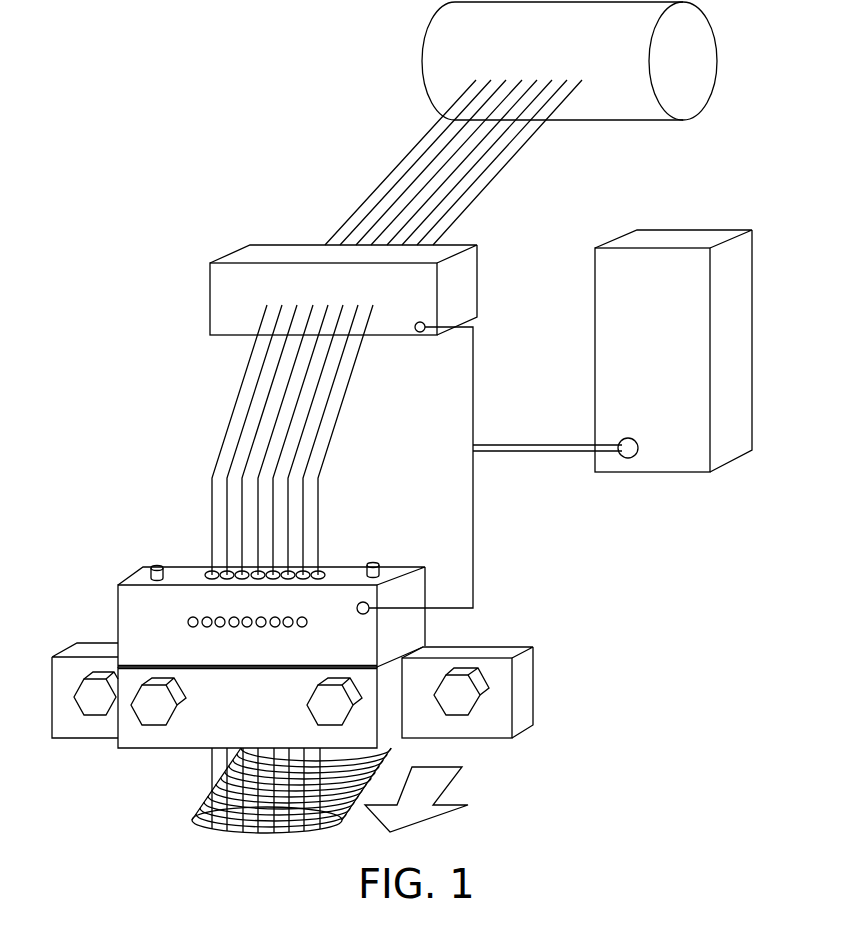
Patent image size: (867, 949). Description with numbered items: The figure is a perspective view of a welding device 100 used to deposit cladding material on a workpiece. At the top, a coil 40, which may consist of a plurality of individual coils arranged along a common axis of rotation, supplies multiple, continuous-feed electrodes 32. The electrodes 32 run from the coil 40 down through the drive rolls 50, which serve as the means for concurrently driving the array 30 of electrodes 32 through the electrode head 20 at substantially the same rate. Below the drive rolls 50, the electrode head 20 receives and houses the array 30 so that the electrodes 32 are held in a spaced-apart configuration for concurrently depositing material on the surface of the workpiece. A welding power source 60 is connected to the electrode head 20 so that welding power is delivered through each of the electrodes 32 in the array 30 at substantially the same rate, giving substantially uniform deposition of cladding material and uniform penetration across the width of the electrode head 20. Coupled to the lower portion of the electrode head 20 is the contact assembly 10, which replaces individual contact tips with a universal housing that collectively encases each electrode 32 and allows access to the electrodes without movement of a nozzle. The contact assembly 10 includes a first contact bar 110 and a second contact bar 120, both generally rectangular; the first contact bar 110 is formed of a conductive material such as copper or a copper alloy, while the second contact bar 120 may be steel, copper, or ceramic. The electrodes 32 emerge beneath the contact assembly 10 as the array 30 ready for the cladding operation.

The welding device 100 is at (222, 152).
The coil 40 is at (437, 62).
The drive rolls 50 is at (219, 290).
The welding power source 60 is at (717, 318).
The contact assembly 10 is at (535, 590).
The electrode head 20 is at (140, 598).
The first contact bar 110 is at (387, 675).
The second contact bar 120 is at (498, 708).
The array 30 is at (181, 771).
The electrodes 32 is at (212, 790).